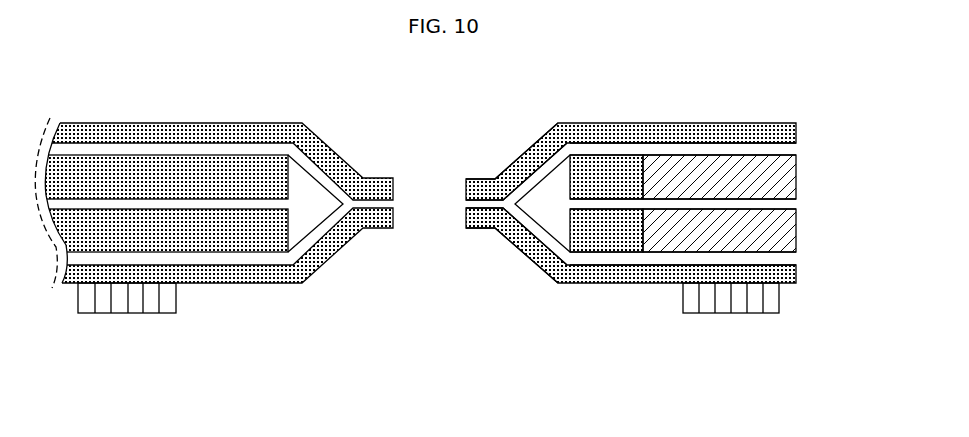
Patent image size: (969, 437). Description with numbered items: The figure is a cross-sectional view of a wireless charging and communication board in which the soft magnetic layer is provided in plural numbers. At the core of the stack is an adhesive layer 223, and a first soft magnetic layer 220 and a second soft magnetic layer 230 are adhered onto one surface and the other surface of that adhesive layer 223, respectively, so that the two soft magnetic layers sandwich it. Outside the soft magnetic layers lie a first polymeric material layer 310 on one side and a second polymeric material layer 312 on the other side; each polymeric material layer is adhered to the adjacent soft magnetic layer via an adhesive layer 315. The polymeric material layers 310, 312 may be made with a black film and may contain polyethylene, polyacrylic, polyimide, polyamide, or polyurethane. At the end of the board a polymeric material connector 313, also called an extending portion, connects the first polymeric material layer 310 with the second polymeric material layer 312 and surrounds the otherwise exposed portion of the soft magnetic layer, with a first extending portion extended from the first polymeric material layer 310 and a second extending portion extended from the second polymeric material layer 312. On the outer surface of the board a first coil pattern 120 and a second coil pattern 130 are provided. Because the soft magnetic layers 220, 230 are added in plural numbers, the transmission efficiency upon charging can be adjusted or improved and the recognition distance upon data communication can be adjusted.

The first coil pattern 120 is at (127, 313).
The second coil pattern 130 is at (732, 313).
The first soft magnetic layer 220 is at (200, 170).
The adhesive layer 223 is at (797, 204).
The second soft magnetic layer 230 is at (797, 178).
The first polymeric material layer 310 is at (797, 130).
The second polymeric material layer 312 is at (797, 275).
The polymeric material connector 313 is at (542, 135).
The adhesive layer 315 is at (797, 150).